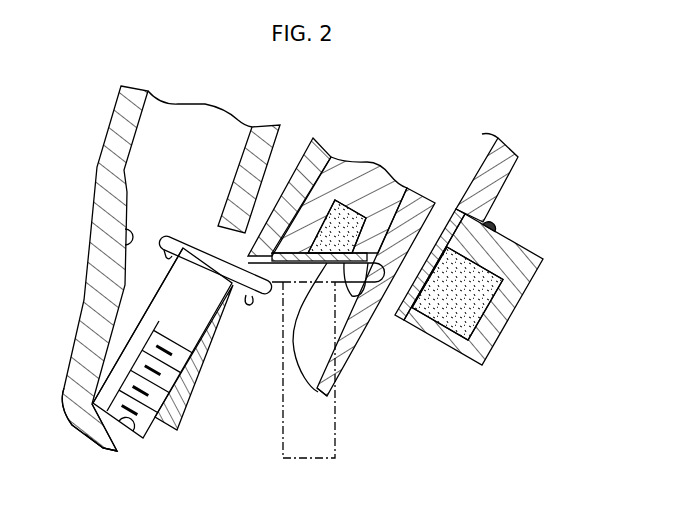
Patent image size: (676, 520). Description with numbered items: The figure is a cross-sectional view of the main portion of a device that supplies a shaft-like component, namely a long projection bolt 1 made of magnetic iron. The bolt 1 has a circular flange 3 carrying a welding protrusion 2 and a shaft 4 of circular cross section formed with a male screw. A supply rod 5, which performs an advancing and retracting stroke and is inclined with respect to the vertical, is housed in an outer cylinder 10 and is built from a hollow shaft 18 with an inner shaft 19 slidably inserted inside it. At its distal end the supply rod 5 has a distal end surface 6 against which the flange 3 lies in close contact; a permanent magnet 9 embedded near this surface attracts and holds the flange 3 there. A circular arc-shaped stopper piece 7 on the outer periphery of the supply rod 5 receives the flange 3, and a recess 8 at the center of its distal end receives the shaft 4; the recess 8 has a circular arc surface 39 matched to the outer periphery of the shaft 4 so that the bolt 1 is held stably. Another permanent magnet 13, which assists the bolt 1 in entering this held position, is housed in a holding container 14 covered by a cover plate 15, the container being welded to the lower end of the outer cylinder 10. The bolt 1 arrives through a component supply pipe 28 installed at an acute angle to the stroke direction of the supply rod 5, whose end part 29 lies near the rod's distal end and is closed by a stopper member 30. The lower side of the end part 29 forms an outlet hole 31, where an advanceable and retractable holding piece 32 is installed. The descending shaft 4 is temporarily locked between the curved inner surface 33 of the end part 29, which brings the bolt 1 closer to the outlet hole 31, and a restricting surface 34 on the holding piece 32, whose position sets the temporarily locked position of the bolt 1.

The projection bolt 1 is at (117, 368).
The welding protrusion 2 is at (168, 256).
The circular flange 3 is at (168, 235).
The shaft 4 is at (148, 335).
The supply rod 5 is at (304, 152).
The distal end surface 6 is at (357, 300).
The stopper piece 7 is at (283, 330).
The recess 8 is at (326, 394).
The magnet 9 is at (345, 200).
The outer cylinder 10 is at (501, 188).
The magnet 13 is at (465, 313).
The holding container 14 is at (526, 291).
The cover plate 15 is at (444, 236).
The hollow shaft 18 is at (417, 200).
The inner shaft 19 is at (368, 188).
The component supply pipe 28 is at (111, 118).
The end part 29 is at (65, 375).
The stopper member 30 is at (101, 447).
The outlet hole 31 is at (222, 236).
The holding piece 32 is at (165, 426).
The inner surface 33 is at (118, 230).
The restricting surface 34 is at (190, 345).
The circular arc surface 39 is at (303, 378).